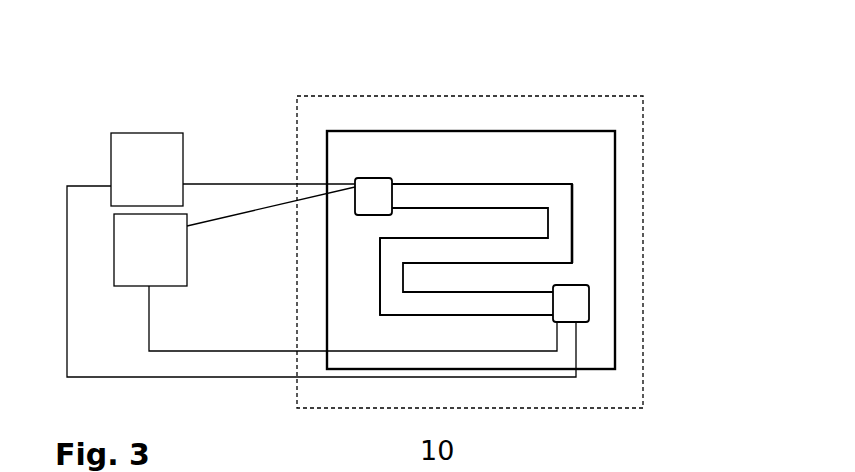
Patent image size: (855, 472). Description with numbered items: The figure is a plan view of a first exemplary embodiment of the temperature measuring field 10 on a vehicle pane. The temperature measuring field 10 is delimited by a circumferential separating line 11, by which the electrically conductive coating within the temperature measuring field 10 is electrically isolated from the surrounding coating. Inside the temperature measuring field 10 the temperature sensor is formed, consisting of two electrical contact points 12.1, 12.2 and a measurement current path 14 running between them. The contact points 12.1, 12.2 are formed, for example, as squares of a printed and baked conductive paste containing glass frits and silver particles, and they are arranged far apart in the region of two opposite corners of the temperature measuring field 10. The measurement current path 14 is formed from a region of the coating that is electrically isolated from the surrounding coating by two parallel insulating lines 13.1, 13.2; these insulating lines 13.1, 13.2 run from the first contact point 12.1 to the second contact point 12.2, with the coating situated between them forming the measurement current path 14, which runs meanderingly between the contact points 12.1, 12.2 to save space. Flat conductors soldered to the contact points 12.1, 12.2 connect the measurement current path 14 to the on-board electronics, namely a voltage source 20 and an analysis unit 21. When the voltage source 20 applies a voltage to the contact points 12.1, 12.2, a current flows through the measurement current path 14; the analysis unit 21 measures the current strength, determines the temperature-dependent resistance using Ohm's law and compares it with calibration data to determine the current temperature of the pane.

The temperature measuring field 10 is at (470, 120).
The separating line 11 is at (615, 198).
The first contact point 12.1 is at (368, 192).
The second contact point 12.2 is at (577, 307).
The first insulating line 13.1 is at (572, 248).
The second insulating line 13.2 is at (380, 273).
The measurement current path 14 is at (502, 195).
The voltage source 20 is at (147, 169).
The analysis unit 21 is at (150, 250).